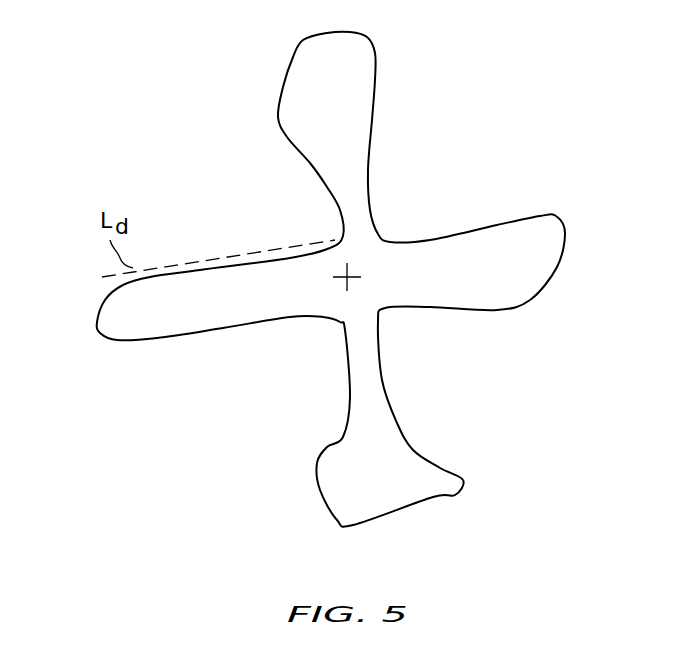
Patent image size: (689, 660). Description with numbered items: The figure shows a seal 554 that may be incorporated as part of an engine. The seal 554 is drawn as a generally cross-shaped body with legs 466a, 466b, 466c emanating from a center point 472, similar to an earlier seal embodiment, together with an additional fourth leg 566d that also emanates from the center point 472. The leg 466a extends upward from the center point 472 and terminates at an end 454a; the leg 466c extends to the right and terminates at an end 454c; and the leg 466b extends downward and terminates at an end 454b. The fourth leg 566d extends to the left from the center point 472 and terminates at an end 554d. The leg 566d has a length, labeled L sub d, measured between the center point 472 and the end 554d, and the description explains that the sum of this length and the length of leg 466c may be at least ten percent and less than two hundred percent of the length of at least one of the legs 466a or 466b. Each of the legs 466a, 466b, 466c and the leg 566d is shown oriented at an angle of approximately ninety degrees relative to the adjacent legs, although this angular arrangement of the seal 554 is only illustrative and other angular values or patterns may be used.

The seal 554 is at (346, 278).
The end 454a is at (333, 50).
The leg 466a is at (273, 139).
The end 454c is at (598, 180).
The leg 466c is at (528, 236).
The end 454b is at (345, 502).
The leg 466b is at (308, 424).
The end 554d is at (110, 326).
The leg 566d is at (177, 329).
The center point 472 is at (347, 282).